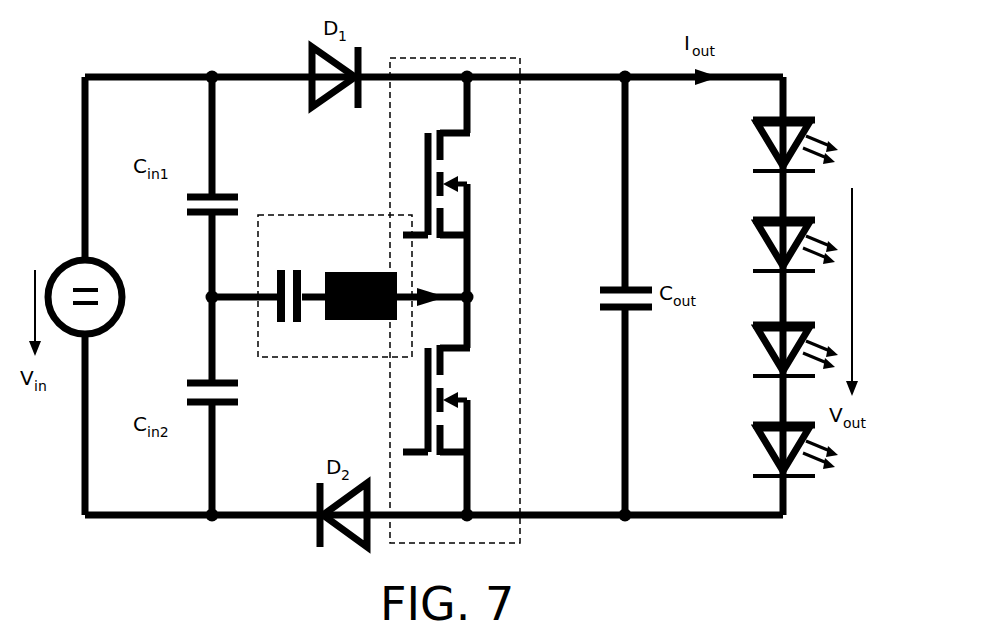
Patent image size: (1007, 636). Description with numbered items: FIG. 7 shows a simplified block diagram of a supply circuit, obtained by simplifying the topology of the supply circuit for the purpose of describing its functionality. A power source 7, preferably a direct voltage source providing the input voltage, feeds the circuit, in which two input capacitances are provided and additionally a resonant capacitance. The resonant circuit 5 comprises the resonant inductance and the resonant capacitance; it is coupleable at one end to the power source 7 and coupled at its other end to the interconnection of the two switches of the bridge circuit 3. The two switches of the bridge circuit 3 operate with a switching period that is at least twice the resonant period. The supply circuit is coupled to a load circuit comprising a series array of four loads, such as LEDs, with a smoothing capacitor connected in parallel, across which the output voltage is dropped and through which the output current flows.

The bridge circuit 3 is at (440, 58).
The resonant circuit 5 is at (300, 215).
The power source 7 is at (68, 258).